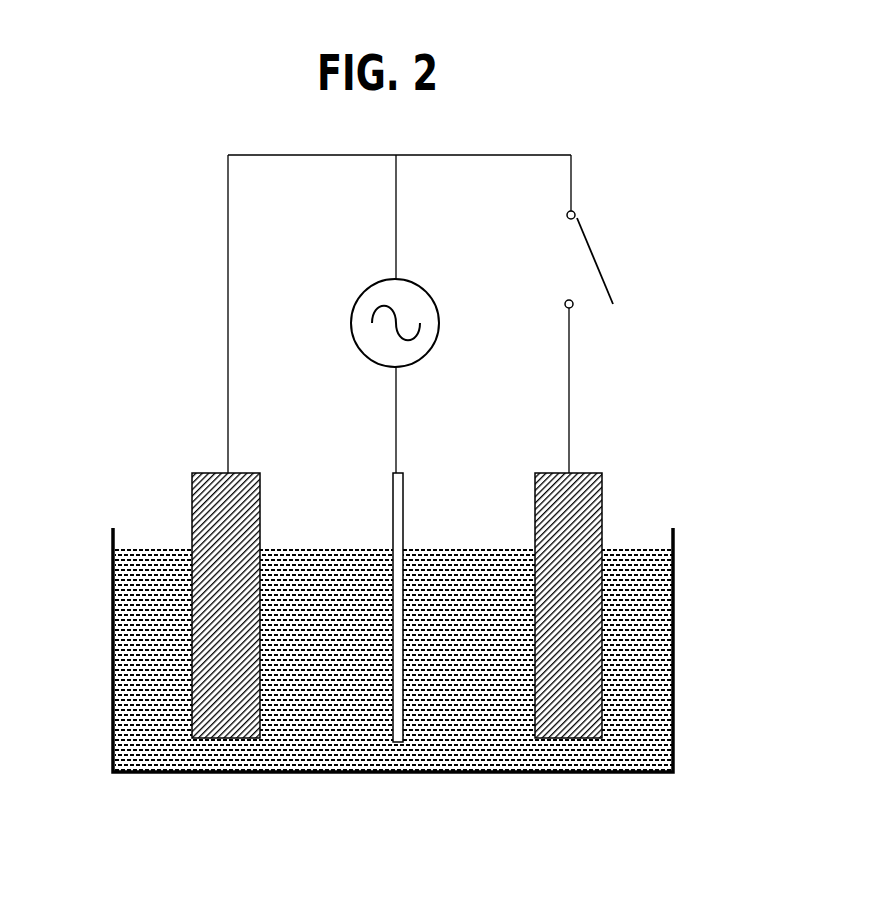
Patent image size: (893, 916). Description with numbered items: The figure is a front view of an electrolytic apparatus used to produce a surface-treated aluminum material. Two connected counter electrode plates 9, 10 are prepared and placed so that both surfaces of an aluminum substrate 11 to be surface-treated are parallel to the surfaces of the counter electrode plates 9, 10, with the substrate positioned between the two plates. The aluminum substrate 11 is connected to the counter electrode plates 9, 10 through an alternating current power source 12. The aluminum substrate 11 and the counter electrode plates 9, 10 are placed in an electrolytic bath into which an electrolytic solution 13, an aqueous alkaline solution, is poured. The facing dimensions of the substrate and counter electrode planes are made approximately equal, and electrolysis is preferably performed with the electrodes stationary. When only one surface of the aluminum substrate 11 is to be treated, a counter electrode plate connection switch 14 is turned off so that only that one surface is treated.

The counter electrode plate 9 is at (183, 533).
The counter electrode plate 10 is at (608, 503).
The aluminum substrate 11 is at (413, 498).
The alternating current power source 12 is at (333, 323).
The electrolytic solution 13 is at (157, 664).
The counter electrode plate connection switch 14 is at (624, 269).